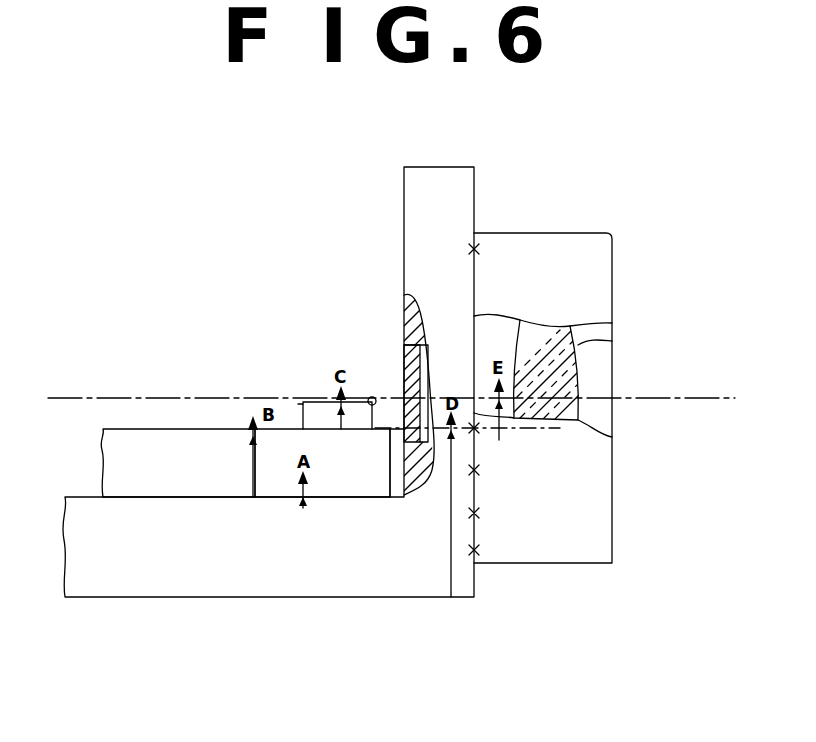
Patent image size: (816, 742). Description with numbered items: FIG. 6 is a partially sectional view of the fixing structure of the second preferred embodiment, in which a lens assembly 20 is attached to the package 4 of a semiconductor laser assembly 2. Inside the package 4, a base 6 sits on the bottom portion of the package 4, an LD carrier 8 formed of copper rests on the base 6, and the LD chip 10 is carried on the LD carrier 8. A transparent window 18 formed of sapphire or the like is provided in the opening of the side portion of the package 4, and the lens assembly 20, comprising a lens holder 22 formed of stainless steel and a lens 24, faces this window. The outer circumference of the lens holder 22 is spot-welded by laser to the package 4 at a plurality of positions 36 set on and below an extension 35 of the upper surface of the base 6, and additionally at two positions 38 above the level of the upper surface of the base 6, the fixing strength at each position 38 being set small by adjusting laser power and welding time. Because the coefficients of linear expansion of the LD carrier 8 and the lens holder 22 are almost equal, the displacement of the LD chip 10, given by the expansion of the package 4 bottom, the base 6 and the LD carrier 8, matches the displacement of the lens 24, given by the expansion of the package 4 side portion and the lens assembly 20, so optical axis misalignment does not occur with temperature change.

The semiconductor laser assembly 2 is at (126, 595).
The package 4 is at (432, 170).
The base 6 is at (134, 435).
The LD carrier 8 is at (305, 425).
The LD chip 10 is at (368, 398).
The transparent window 18 is at (403, 345).
The lens assembly 20 is at (579, 232).
The lens holder 22 is at (600, 248).
The lens 24 is at (576, 346).
The extension of the upper surface of the base 35 is at (498, 440).
The positions 36 is at (482, 549).
The positions 38 is at (484, 248).